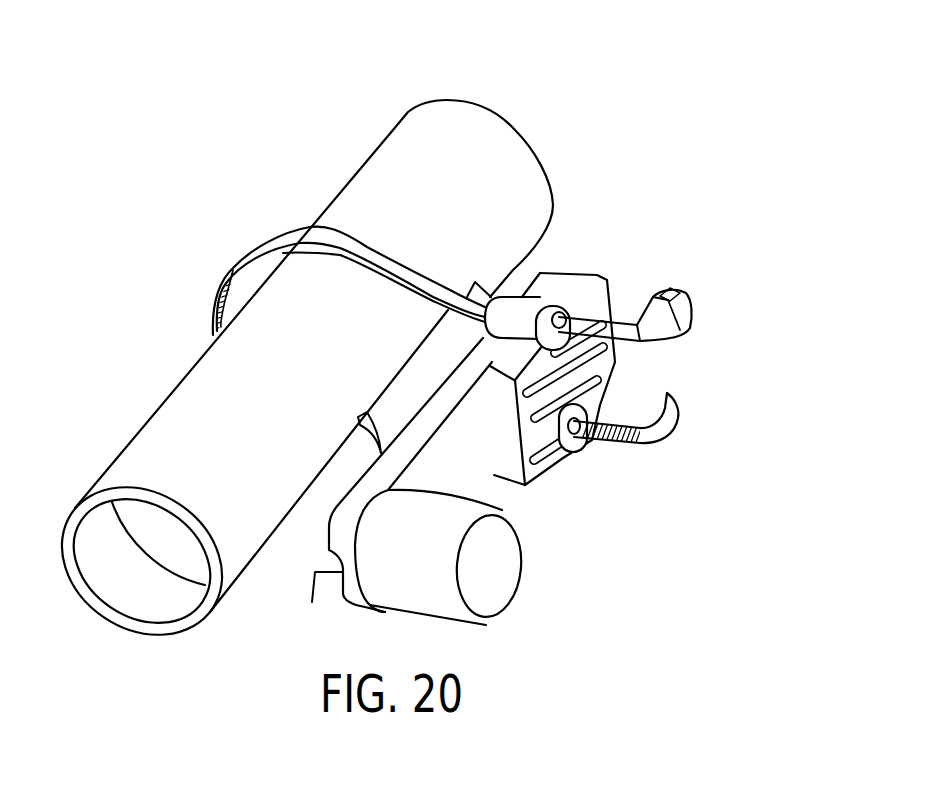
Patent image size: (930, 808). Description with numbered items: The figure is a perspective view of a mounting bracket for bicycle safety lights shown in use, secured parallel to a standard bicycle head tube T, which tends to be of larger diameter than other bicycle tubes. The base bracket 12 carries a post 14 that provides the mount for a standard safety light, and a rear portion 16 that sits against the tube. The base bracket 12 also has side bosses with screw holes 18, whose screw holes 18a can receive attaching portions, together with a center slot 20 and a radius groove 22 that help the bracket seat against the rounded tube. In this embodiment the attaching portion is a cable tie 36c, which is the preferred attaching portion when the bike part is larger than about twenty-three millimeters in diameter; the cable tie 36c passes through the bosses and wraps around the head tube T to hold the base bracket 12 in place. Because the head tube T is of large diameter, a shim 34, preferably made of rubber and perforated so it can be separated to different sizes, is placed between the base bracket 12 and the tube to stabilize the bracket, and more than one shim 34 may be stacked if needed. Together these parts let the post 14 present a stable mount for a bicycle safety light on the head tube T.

The bicycle head tube T is at (498, 140).
The base bracket 12 is at (472, 488).
The post 14 is at (493, 573).
The rear portion 16 is at (612, 365).
The side bosses with screw holes 18 is at (538, 310).
The screw holes 18a is at (590, 300).
The center slot 20 is at (570, 375).
The radius groove 22 is at (318, 607).
The shim 34 is at (433, 358).
The cable tie 36c is at (282, 240).